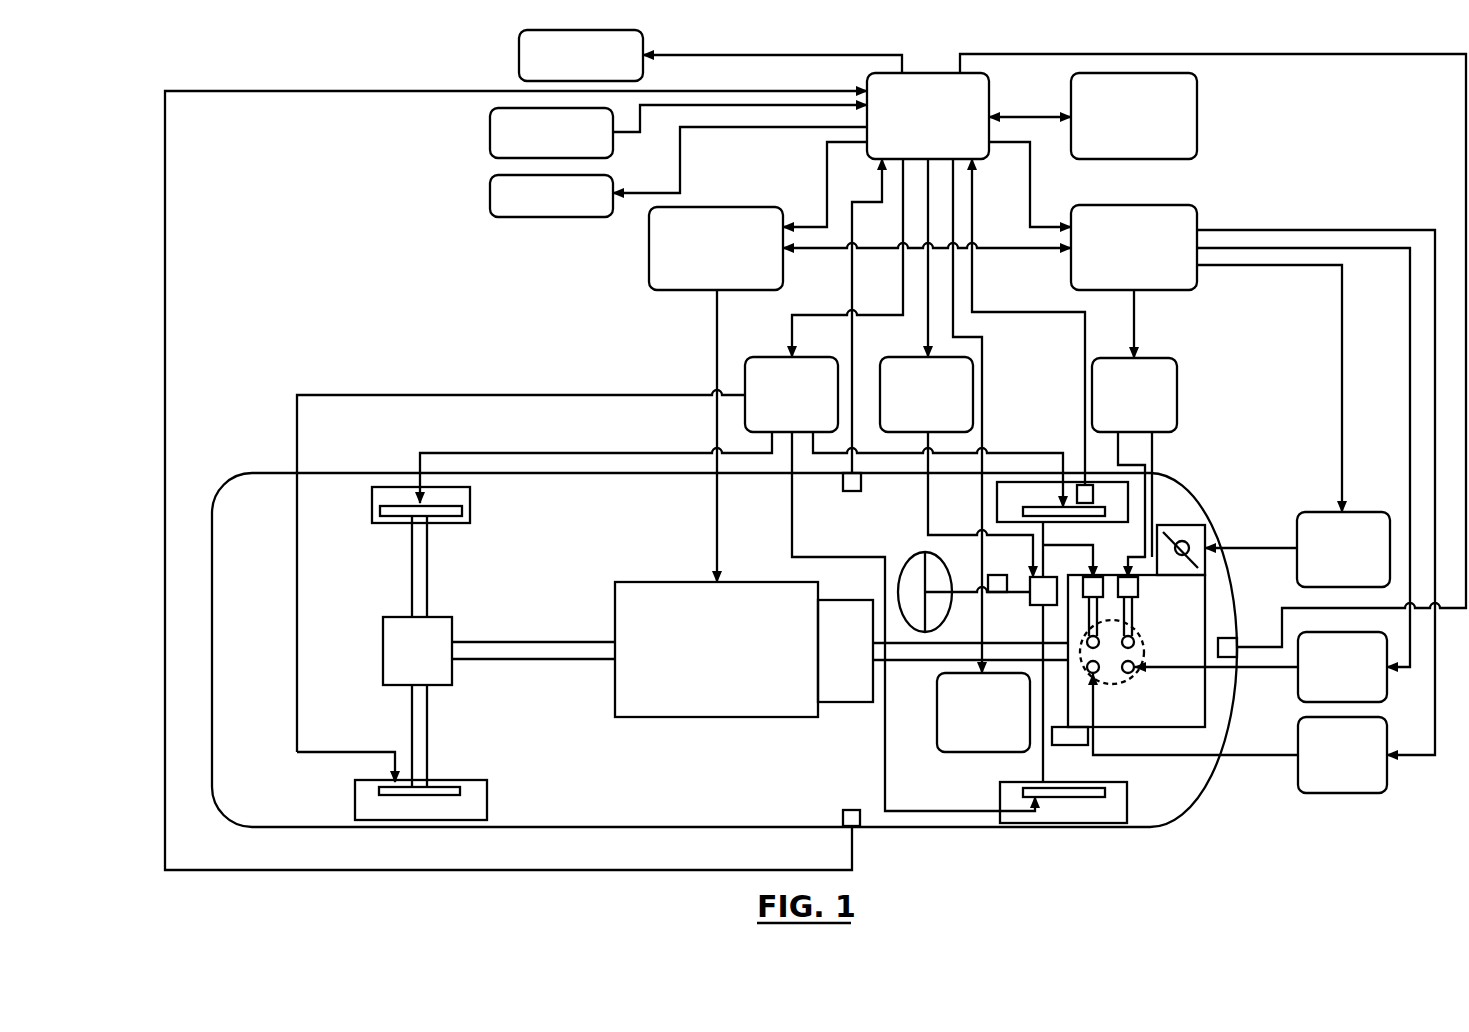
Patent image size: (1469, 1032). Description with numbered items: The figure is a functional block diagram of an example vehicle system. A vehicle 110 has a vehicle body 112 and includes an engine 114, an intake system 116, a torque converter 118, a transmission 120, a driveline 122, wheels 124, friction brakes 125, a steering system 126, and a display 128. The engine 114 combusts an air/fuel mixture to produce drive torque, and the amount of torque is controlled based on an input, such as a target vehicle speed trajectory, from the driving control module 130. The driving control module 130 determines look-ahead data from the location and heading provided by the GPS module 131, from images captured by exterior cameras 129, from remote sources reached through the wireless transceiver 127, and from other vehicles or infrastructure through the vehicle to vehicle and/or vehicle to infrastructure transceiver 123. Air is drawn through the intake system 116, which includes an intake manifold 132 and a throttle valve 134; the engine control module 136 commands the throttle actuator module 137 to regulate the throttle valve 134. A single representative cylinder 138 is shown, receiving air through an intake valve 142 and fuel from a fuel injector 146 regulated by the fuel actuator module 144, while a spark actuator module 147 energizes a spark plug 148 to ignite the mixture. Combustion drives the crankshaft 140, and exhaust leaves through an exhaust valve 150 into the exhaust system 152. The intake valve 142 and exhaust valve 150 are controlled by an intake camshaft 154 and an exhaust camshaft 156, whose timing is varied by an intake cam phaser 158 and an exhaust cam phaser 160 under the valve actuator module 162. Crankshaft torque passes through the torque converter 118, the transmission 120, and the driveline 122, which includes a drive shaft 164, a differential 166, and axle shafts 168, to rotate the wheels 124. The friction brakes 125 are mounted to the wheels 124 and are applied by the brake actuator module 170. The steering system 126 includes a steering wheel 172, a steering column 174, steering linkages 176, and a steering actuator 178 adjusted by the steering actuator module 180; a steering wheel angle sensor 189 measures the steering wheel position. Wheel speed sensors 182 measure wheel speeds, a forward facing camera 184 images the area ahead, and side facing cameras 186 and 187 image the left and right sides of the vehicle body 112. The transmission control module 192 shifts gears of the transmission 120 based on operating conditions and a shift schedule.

The vehicle 110 is at (163, 73).
The vehicle body 112 is at (343, 470).
The engine 114 is at (1107, 728).
The intake system 116 is at (1212, 538).
The torque converter 118 is at (847, 703).
The transmission 120 is at (717, 720).
The driveline 122 is at (557, 597).
The vehicle to vehicle and/or vehicle to infrastructure transceiver 123 is at (517, 57).
The wheels 124 is at (370, 503).
The friction brakes 125 is at (400, 505).
The steering system 126 is at (910, 520).
The transceiver 127 is at (488, 195).
The display 128 is at (937, 742).
The exterior cameras 129 is at (488, 134).
The driving control module 130 is at (990, 88).
The global positioning system module 131 is at (1197, 117).
The intake manifold 132 is at (1207, 620).
The throttle valve 134 is at (1183, 525).
The engine control module 136 is at (1132, 204).
The throttle actuator module 137 is at (1317, 510).
The cylinder 138 is at (1138, 636).
The crankshaft 140 is at (942, 662).
The intake valve 142 is at (1097, 648).
The fuel actuator module 144 is at (1298, 687).
The fuel injector 146 is at (1135, 672).
The spark actuator module 147 is at (1298, 773).
The spark plug 148 is at (1097, 673).
The exhaust valve 150 is at (1140, 642).
The exhaust system 152 is at (1070, 747).
The intake camshaft 154 is at (1088, 612).
The exhaust camshaft 156 is at (1133, 611).
The intake cam phaser 158 is at (1088, 583).
The exhaust cam phaser 160 is at (1138, 584).
The valve actuator module 162 is at (1163, 352).
The drive shaft 164 is at (540, 664).
The differential 166 is at (382, 652).
The axle shafts 168 is at (410, 570).
The brake actuator module 170 is at (775, 355).
The steering wheel 172 is at (912, 555).
The steering column 174 is at (978, 590).
The steering linkages 176 is at (1046, 551).
The steering actuator 178 is at (1030, 578).
The steering actuator module 180 is at (903, 355).
The wheel speed sensors 182 is at (1078, 485).
The forward facing camera 184 is at (1227, 638).
The side facing camera 186 is at (847, 493).
The side facing camera 187 is at (848, 808).
The steering wheel angle sensor 189 is at (997, 595).
The transmission control module 192 is at (717, 205).